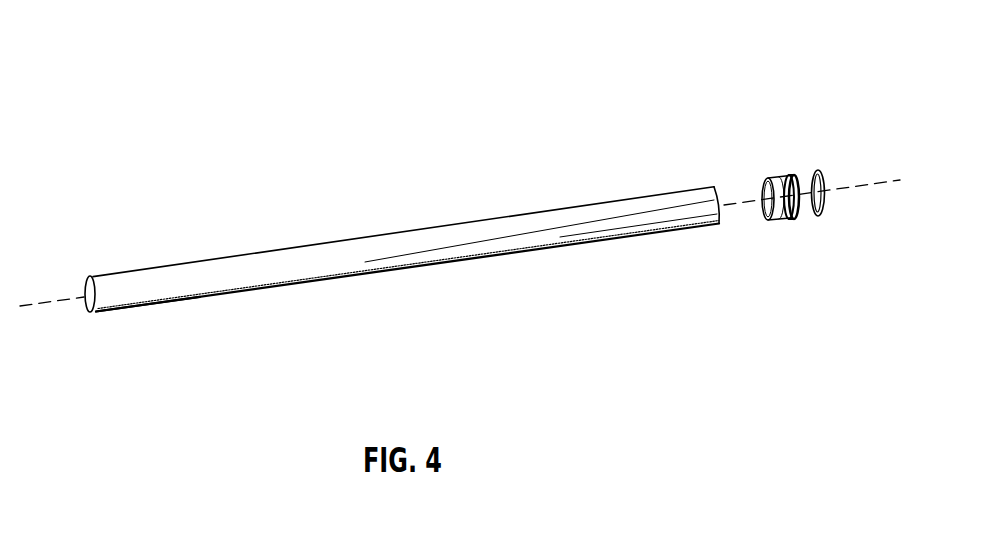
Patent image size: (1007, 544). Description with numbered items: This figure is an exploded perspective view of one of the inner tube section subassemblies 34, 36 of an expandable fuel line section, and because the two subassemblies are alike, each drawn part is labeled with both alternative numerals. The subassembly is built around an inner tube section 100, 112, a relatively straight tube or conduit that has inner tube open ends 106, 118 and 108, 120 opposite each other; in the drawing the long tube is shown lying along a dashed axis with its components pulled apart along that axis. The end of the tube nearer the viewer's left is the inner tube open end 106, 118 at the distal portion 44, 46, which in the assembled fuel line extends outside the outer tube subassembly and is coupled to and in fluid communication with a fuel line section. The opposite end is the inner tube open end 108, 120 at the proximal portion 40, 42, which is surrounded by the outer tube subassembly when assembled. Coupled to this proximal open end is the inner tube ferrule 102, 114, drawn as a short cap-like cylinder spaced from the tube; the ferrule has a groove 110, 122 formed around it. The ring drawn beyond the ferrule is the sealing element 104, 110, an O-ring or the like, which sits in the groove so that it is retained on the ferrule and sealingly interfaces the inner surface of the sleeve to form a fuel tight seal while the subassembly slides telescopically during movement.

The inner tube section subassembly 34 is at (461, 241).
The inner tube section subassembly 36 is at (427, 178).
The proximal portion 40 is at (410, 256).
The proximal portion 42 is at (682, 200).
The distal portion 44 is at (137, 336).
The distal portion 46 is at (137, 308).
The inner tube section 100 is at (406, 262).
The inner tube section 112 is at (368, 270).
The inner tube ferrule 102 is at (813, 222).
The inner tube ferrule 114 is at (778, 219).
The sealing element 104 is at (844, 238).
The groove 110 is at (822, 216).
The inner tube open end 106 is at (101, 258).
The inner tube open end 118 is at (86, 277).
The inner tube open end 108 is at (717, 237).
The inner tube open end 120 is at (723, 210).
The groove 122 is at (808, 134).